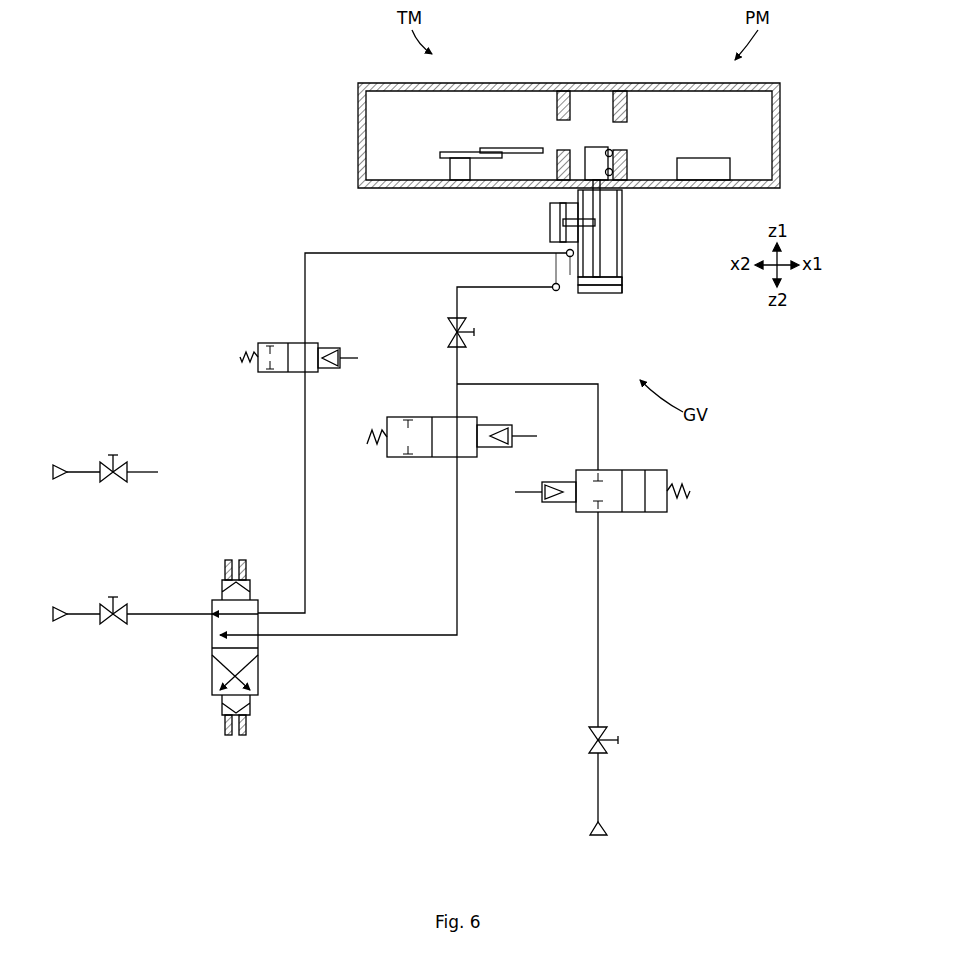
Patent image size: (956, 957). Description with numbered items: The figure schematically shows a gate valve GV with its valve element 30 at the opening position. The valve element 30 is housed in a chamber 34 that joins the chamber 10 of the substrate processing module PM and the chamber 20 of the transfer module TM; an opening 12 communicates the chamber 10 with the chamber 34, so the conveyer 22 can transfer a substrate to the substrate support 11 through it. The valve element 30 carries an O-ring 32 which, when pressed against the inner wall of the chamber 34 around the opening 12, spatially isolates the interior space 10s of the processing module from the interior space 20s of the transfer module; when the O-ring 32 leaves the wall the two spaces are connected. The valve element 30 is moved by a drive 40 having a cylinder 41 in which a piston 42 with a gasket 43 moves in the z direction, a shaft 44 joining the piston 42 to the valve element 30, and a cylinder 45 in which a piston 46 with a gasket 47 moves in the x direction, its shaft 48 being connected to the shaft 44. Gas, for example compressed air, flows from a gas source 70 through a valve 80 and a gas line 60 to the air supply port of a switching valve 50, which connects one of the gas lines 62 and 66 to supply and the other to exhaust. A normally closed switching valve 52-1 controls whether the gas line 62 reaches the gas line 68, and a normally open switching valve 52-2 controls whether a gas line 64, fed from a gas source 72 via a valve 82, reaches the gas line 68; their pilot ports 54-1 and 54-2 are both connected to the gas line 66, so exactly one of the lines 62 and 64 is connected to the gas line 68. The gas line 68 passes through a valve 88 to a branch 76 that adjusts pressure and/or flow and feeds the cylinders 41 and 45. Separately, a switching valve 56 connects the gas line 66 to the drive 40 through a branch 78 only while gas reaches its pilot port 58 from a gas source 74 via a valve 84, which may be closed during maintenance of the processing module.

The chamber 10 is at (700, 83).
The interior space 10s is at (673, 100).
The substrate support 11 is at (702, 157).
The opening 12 is at (628, 135).
The chamber 20 is at (455, 83).
The interior space 20s is at (505, 103).
The conveyer 22 is at (474, 142).
The valve element 30 is at (592, 146).
The O-ring 32 is at (607, 147).
The chamber 34 is at (592, 82).
The drive 40 is at (655, 234).
The cylinder 41 is at (600, 286).
The piston 42 is at (604, 294).
The gasket 43 is at (624, 290).
The shaft 44 is at (604, 232).
The cylinder 45 is at (548, 218).
The piston 46 is at (560, 230).
The gasket 47 is at (560, 204).
The shaft 48 is at (624, 249).
The switching valve 50 is at (258, 688).
The switching valve 52-1 is at (432, 416).
The switching valve 52-2 is at (640, 470).
The pilot port 54-1 is at (495, 425).
The pilot port 54-2 is at (560, 480).
The switching valve 56 is at (305, 343).
The pilot port 58 is at (337, 348).
The gas line 60 is at (172, 612).
The gas line 62 is at (350, 634).
The gas line 64 is at (600, 585).
The gas line 66 is at (307, 470).
The gas line 68 is at (460, 362).
The gas source 70 is at (62, 607).
The gas source 72 is at (602, 826).
The gas source 74 is at (62, 465).
The branch 76 is at (556, 292).
The branch 78 is at (570, 258).
The valve 80 is at (126, 607).
The valve 82 is at (600, 725).
The valve 84 is at (126, 465).
The valve 88 is at (455, 318).